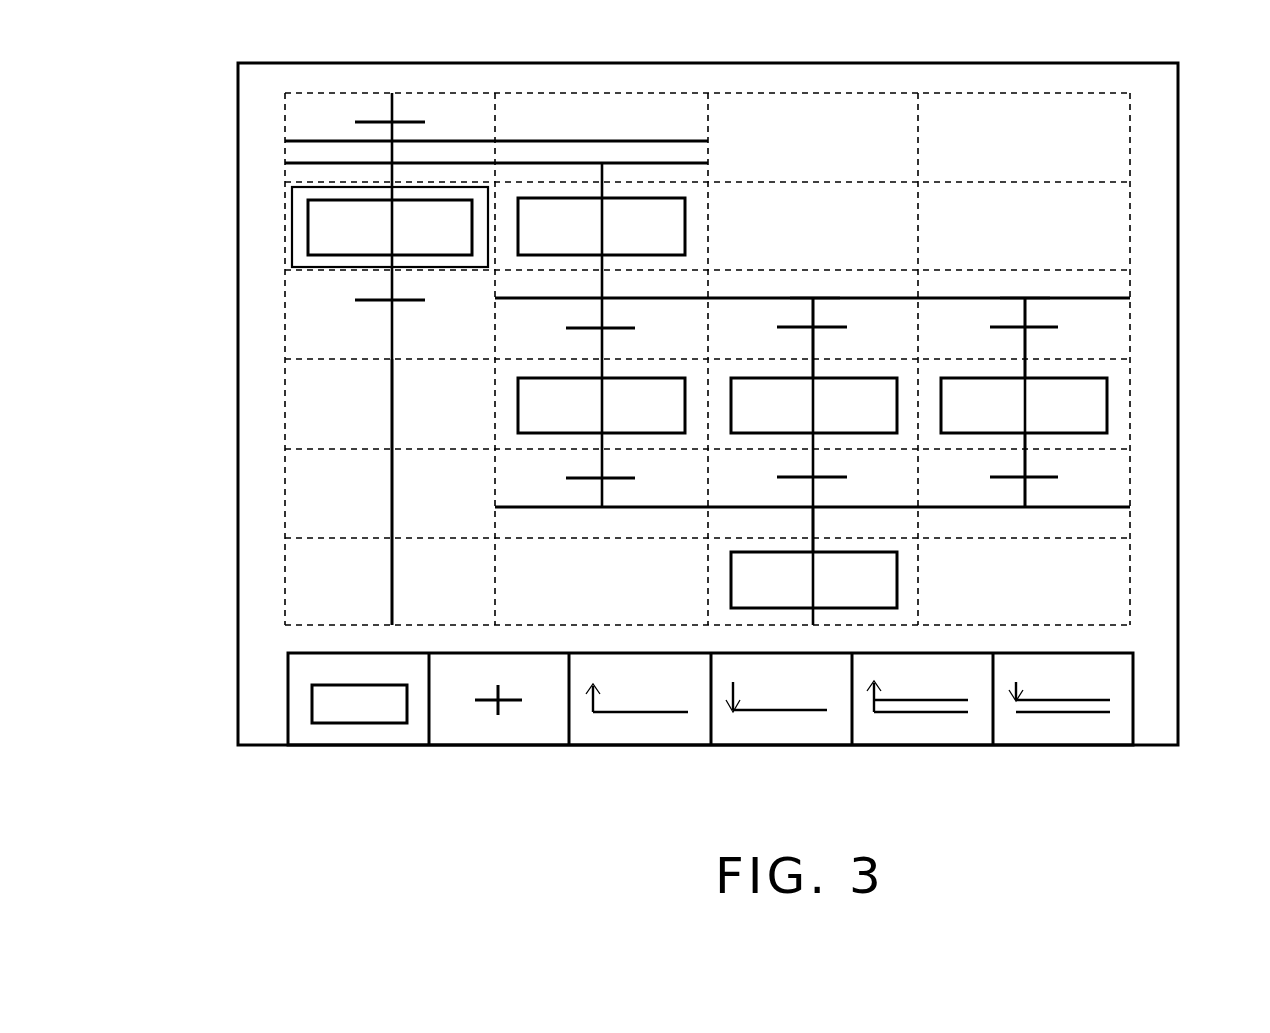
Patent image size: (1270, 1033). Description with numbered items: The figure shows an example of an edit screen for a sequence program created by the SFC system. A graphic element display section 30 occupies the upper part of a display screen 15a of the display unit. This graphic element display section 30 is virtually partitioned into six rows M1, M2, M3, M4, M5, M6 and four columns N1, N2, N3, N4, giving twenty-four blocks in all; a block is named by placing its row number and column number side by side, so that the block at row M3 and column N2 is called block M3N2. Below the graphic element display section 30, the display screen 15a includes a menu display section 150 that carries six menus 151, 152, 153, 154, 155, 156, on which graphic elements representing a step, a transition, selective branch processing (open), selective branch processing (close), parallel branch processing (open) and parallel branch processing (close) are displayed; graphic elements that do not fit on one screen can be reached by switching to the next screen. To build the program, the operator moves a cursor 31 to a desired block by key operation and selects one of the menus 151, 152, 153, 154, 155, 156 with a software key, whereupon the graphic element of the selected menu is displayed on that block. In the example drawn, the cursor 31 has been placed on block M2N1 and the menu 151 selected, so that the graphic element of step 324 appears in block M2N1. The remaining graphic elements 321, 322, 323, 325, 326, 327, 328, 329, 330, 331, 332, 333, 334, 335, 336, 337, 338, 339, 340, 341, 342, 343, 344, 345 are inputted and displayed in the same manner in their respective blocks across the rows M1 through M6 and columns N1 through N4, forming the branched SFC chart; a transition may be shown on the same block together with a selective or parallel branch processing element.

The display screen 15a is at (1103, 63).
The graphic element display section 30 is at (1132, 107).
The cursor 31 is at (292, 209).
The menu display section 150 is at (1135, 675).
The menu 151 is at (337, 745).
The menu 152 is at (475, 745).
The menu 153 is at (623, 745).
The menu 154 is at (760, 745).
The menu 155 is at (905, 745).
The menu 156 is at (1043, 745).
The graphic element 321 is at (372, 120).
The graphic element 322 is at (445, 141).
The graphic element 323 is at (592, 141).
The step 324 is at (337, 255).
The graphic element 325 is at (685, 205).
The graphic element 326 is at (405, 300).
The graphic element 327 is at (677, 298).
The graphic element 328 is at (635, 328).
The graphic element 329 is at (828, 298).
The graphic element 330 is at (847, 327).
The graphic element 331 is at (972, 298).
The graphic element 332 is at (1058, 327).
The graphic element 333 is at (518, 420).
The graphic element 334 is at (778, 433).
The graphic element 335 is at (995, 433).
The graphic element 336 is at (635, 478).
The graphic element 337 is at (563, 510).
The graphic element 338 is at (847, 477).
The graphic element 339 is at (748, 510).
The graphic element 340 is at (1058, 477).
The graphic element 341 is at (973, 510).
The graphic element 342 is at (897, 590).
The graphic element 343 is at (392, 400).
The graphic element 344 is at (392, 490).
The graphic element 345 is at (392, 578).
The column N1 is at (345, 92).
The column N2 is at (550, 92).
The column N3 is at (793, 92).
The column N4 is at (1013, 92).
The row M1 is at (285, 153).
The row M2 is at (285, 244).
The row M3 is at (285, 325).
The row M4 is at (285, 418).
The row M5 is at (285, 513).
The row M6 is at (285, 596).